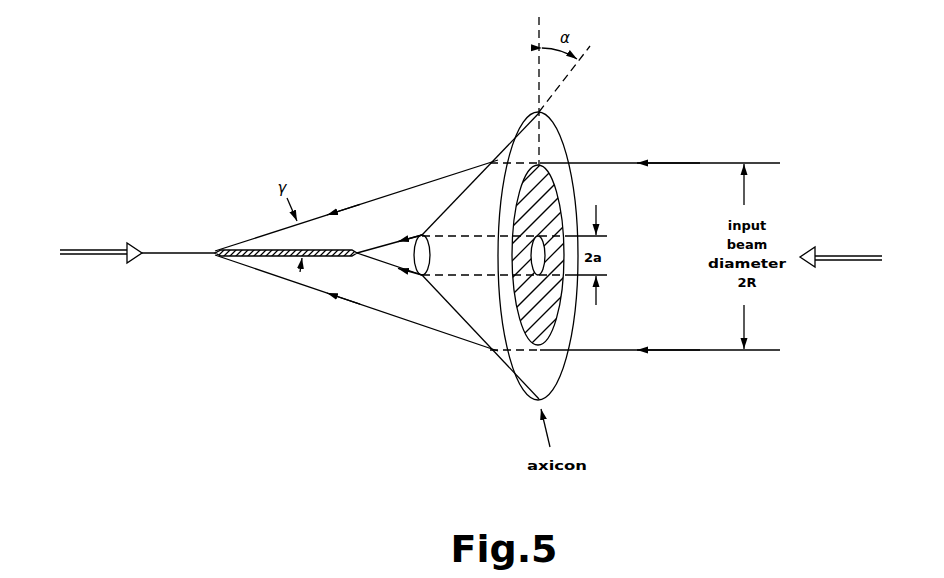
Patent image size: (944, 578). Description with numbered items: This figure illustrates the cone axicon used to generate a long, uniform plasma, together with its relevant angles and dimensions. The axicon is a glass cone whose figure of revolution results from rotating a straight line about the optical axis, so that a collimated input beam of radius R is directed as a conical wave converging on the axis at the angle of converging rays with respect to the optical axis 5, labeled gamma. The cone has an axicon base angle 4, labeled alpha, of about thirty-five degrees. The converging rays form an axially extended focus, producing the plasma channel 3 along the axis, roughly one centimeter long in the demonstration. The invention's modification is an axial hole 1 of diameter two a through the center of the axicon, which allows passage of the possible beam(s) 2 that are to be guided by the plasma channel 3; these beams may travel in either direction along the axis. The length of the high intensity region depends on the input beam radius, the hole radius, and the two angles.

The axial hole 1 is at (611, 263).
The possible beam(s) to be guided 2 is at (90, 246).
The plasma channel 3 is at (268, 259).
The axicon base angle 4 is at (583, 34).
The angle of converging rays with respect to the optical axis 5 is at (296, 183).